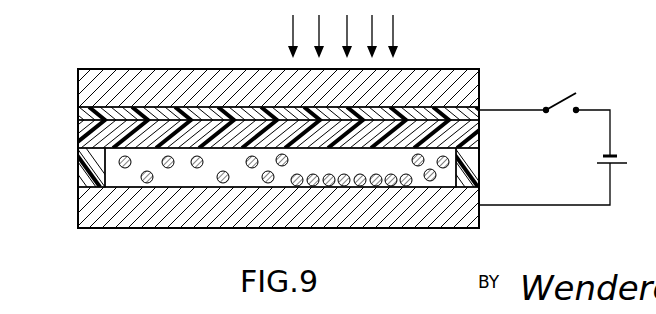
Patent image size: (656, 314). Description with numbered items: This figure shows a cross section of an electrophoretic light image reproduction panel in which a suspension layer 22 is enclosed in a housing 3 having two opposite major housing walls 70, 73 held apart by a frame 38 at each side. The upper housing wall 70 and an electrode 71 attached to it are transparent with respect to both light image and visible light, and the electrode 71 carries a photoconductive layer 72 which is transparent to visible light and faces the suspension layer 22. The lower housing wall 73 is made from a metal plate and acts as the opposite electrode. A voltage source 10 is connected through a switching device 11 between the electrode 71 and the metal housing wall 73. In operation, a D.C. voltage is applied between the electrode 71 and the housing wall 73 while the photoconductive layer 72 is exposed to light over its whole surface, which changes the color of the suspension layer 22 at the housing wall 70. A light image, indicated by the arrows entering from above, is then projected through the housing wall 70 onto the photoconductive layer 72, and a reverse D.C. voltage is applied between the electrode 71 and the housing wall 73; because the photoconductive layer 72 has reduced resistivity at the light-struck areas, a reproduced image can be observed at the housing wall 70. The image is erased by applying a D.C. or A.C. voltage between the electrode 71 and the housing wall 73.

The housing 3 is at (76, 67).
The housing wall 70 is at (92, 80).
The electrode 71 is at (84, 114).
The photoconductive layer 72 is at (88, 131).
The frame 38 is at (80, 163).
The suspension layer 22 is at (133, 178).
The housing wall 73 is at (85, 194).
The switching device 11 is at (560, 100).
The voltage source 10 is at (612, 153).